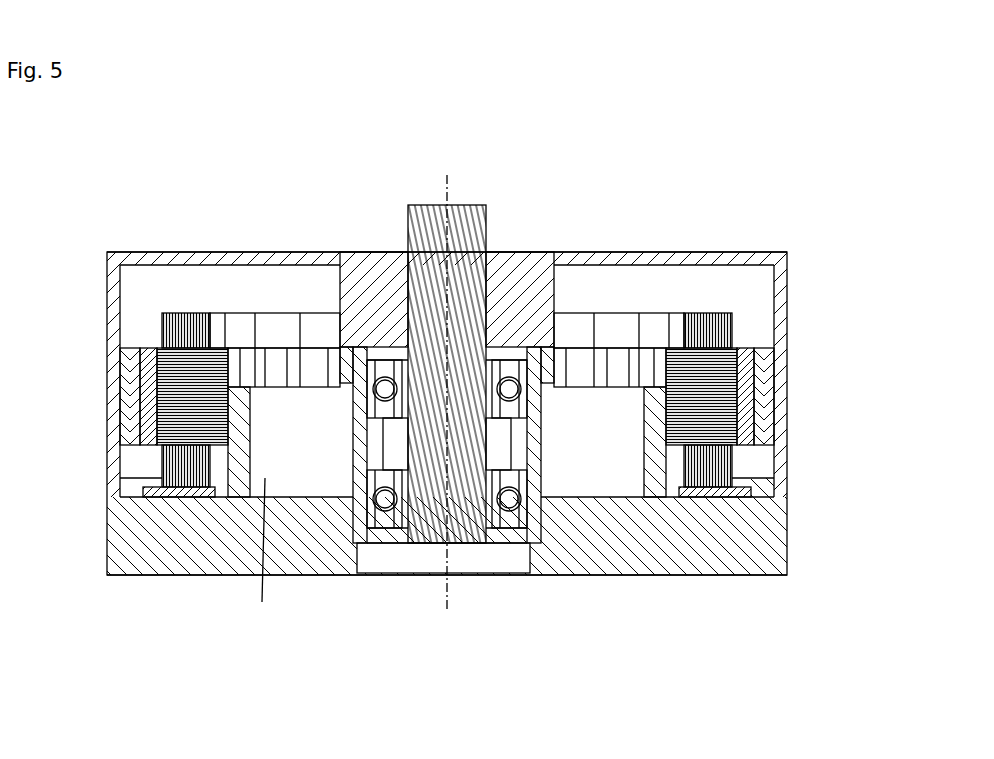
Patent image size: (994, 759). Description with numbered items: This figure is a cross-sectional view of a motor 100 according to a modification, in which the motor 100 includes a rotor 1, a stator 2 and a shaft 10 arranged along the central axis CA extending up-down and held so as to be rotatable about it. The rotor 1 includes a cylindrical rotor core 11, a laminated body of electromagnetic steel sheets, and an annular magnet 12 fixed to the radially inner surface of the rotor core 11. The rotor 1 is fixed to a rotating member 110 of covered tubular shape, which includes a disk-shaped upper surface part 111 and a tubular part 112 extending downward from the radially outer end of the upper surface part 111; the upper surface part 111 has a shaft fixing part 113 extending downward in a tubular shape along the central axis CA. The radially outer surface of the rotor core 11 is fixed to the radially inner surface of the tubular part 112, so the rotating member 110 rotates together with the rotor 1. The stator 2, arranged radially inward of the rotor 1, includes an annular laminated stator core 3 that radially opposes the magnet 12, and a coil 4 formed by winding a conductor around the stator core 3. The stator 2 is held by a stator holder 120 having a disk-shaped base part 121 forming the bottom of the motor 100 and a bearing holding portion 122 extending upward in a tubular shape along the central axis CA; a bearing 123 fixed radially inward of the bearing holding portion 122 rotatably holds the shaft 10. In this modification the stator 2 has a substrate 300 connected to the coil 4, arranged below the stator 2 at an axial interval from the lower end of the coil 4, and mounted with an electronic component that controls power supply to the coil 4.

The motor 100 is at (191, 227).
The rotating member 110 is at (456, 323).
The upper surface part 111 is at (715, 265).
The tubular part 112 is at (787, 301).
The shaft fixing part 113 is at (501, 269).
The stator holder 120 is at (447, 467).
The base part 121 is at (581, 562).
The bearing holding portion 122 is at (513, 437).
The bearing 123 is at (390, 360).
The shaft 10 is at (428, 535).
The rotor 1 is at (440, 507).
The rotor core 11 is at (132, 447).
The magnet 12 is at (143, 447).
The stator 2 is at (447, 490).
The stator core 3 is at (680, 443).
The coil 4 is at (712, 483).
The substrate 300 is at (741, 497).
The central axis CA is at (447, 407).